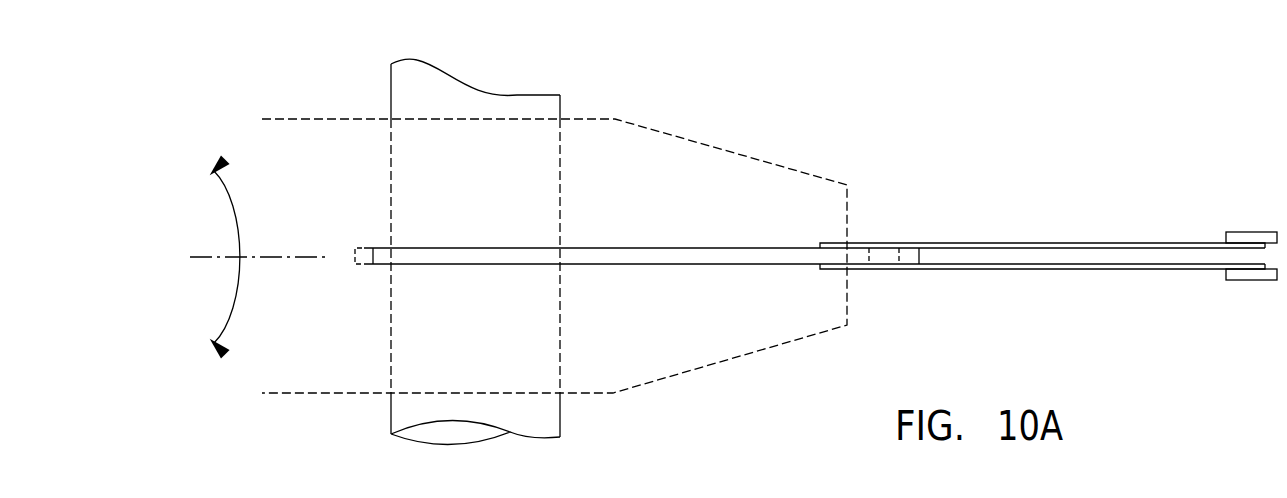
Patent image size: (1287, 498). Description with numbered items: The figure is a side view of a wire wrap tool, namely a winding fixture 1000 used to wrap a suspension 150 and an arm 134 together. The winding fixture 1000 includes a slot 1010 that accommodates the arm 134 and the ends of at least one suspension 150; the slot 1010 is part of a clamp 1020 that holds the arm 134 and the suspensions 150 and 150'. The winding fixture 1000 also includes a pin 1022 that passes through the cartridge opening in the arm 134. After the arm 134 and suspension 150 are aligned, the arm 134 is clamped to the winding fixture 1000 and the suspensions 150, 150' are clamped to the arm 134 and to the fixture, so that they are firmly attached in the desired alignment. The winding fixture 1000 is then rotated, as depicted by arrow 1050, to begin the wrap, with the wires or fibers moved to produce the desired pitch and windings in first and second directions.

The winding fixture 1000 is at (884, 151).
The slot 1010 is at (680, 262).
The clamp 1020 is at (712, 163).
The pin 1022 is at (475, 133).
The arrow 1050 is at (258, 173).
The arm 134 is at (772, 257).
The suspension 150 is at (1048, 287).
The suspension 150' is at (1048, 226).